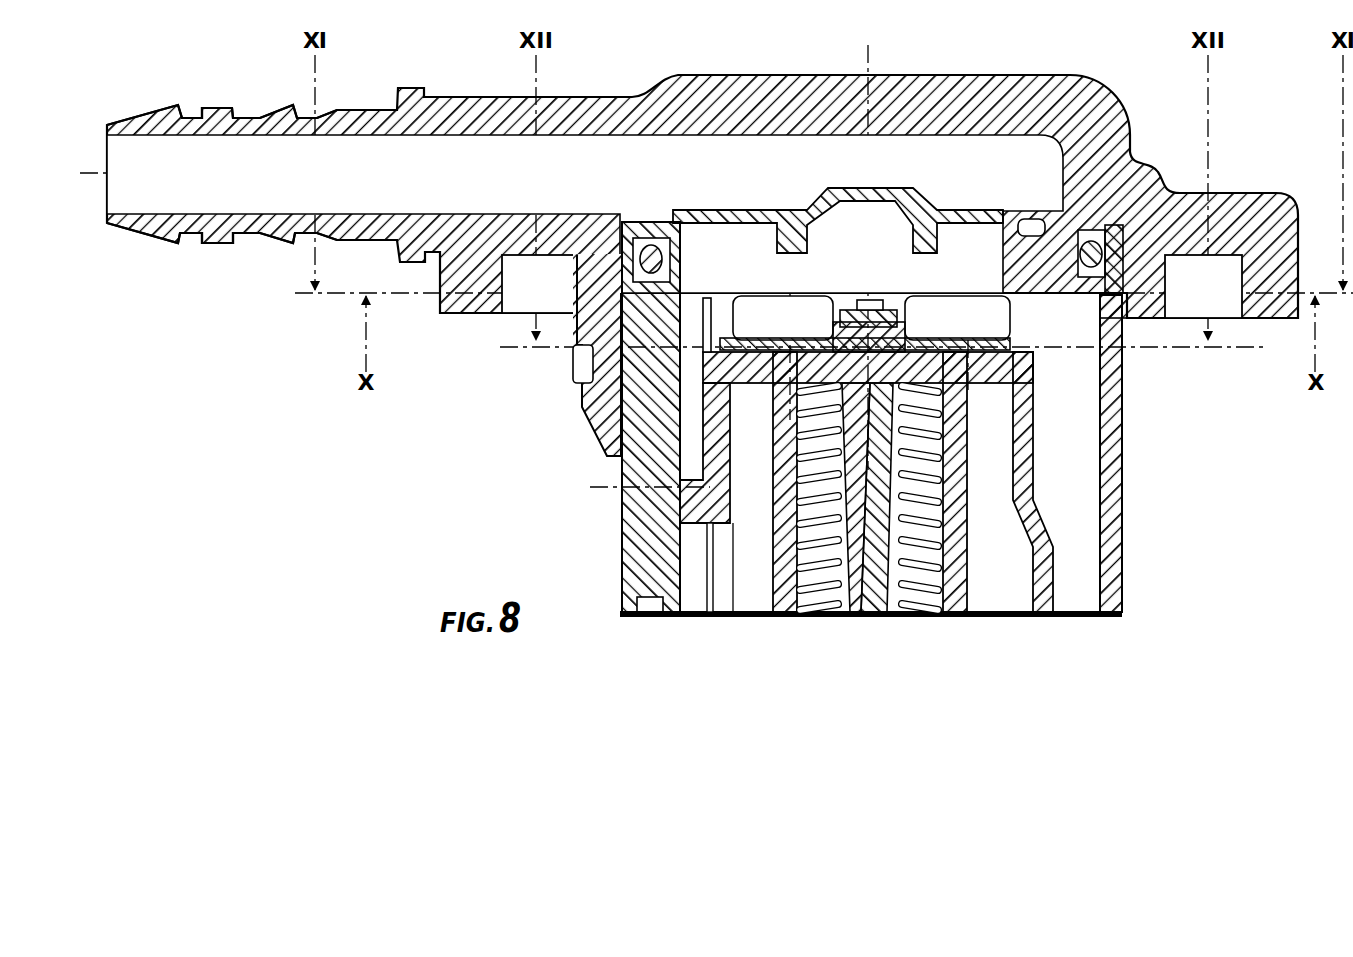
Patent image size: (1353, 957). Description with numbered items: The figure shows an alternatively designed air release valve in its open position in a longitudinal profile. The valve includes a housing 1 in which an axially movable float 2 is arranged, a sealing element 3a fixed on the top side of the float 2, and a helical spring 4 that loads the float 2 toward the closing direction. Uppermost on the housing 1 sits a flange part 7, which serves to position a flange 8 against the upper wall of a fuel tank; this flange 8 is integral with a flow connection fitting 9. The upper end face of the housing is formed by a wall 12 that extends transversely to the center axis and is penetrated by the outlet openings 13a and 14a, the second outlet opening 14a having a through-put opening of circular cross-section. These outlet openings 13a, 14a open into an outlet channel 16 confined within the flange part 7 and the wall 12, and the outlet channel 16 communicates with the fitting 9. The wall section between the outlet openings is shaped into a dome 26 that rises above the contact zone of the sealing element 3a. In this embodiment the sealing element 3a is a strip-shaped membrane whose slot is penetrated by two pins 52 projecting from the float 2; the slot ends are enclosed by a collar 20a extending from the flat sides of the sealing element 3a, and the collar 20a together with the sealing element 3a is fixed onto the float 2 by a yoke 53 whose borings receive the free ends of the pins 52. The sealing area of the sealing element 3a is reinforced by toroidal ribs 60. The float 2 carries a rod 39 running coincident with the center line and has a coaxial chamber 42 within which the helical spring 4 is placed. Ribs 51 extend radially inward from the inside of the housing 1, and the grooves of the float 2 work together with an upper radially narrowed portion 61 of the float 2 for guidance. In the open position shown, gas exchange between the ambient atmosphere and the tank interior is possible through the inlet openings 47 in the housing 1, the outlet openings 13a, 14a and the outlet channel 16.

The housing 1 is at (1128, 607).
The float 2 is at (1040, 462).
The sealing element 3a is at (1038, 320).
The helical spring 4 is at (920, 600).
The flange part 7 is at (855, 107).
The flange 8 is at (468, 300).
The flow connection fitting 9 is at (153, 228).
The wall 12 is at (660, 145).
The outlet opening 13a is at (745, 205).
The second outlet opening 14a is at (977, 220).
The outlet channel 16 is at (790, 150).
The collar 20a is at (705, 548).
The dome 26 is at (872, 320).
The rod 39 is at (860, 595).
The chamber 42 is at (773, 600).
The inlet openings 47 is at (1087, 338).
The ribs 51 is at (692, 397).
The pins 52 is at (878, 600).
The yoke 53 is at (940, 332).
The toroidal ribs 60 is at (690, 480).
The upper radially narrowed portion 61 is at (1028, 512).